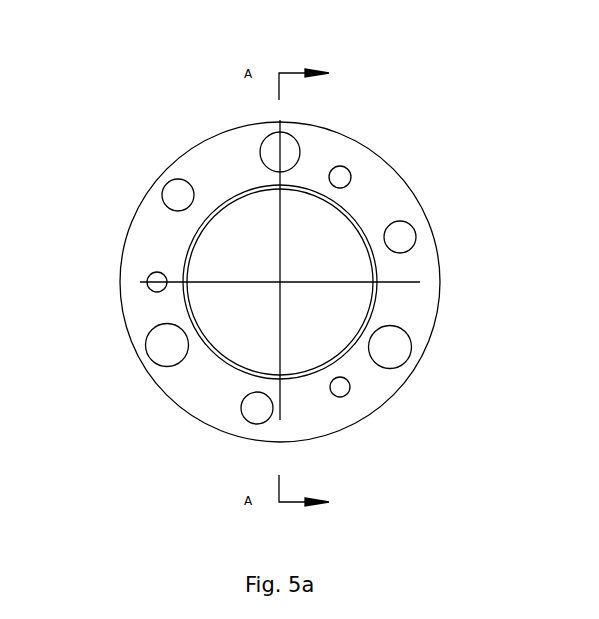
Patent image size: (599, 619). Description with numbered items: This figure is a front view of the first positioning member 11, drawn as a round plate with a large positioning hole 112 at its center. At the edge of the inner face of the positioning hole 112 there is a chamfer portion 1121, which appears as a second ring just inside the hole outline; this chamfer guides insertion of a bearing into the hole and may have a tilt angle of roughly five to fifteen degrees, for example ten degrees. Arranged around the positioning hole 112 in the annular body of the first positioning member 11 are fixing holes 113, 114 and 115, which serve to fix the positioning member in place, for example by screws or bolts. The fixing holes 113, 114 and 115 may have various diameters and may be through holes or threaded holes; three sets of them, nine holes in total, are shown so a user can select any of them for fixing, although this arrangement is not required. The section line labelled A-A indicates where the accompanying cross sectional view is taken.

The first positioning member 11 is at (254, 33).
The positioning hole 112 is at (333, 252).
The chamfer portion 1121 is at (347, 208).
The fixing hole 113 is at (270, 142).
The fixing hole 114 is at (175, 195).
The fixing hole 115 is at (150, 280).